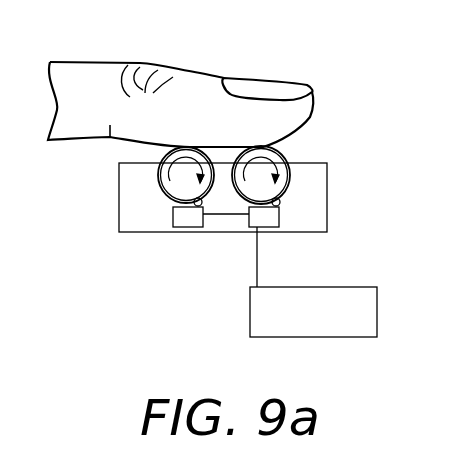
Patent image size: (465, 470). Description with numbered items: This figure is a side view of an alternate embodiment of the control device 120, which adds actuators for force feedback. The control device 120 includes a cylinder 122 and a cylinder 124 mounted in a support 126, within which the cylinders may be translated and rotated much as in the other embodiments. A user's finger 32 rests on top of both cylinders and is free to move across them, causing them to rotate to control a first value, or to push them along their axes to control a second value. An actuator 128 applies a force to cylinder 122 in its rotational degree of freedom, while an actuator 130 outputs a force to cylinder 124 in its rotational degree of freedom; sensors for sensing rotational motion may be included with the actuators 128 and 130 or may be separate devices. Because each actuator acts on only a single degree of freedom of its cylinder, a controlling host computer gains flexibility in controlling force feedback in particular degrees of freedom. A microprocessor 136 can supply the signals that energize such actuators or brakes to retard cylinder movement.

The finger 32 is at (200, 87).
The control device 120 is at (327, 58).
The cylinder 122 is at (165, 185).
The cylinder 124 is at (283, 158).
The support 126 is at (136, 233).
The actuator 128 is at (182, 222).
The actuator 130 is at (275, 217).
The microprocessor 136 is at (323, 337).